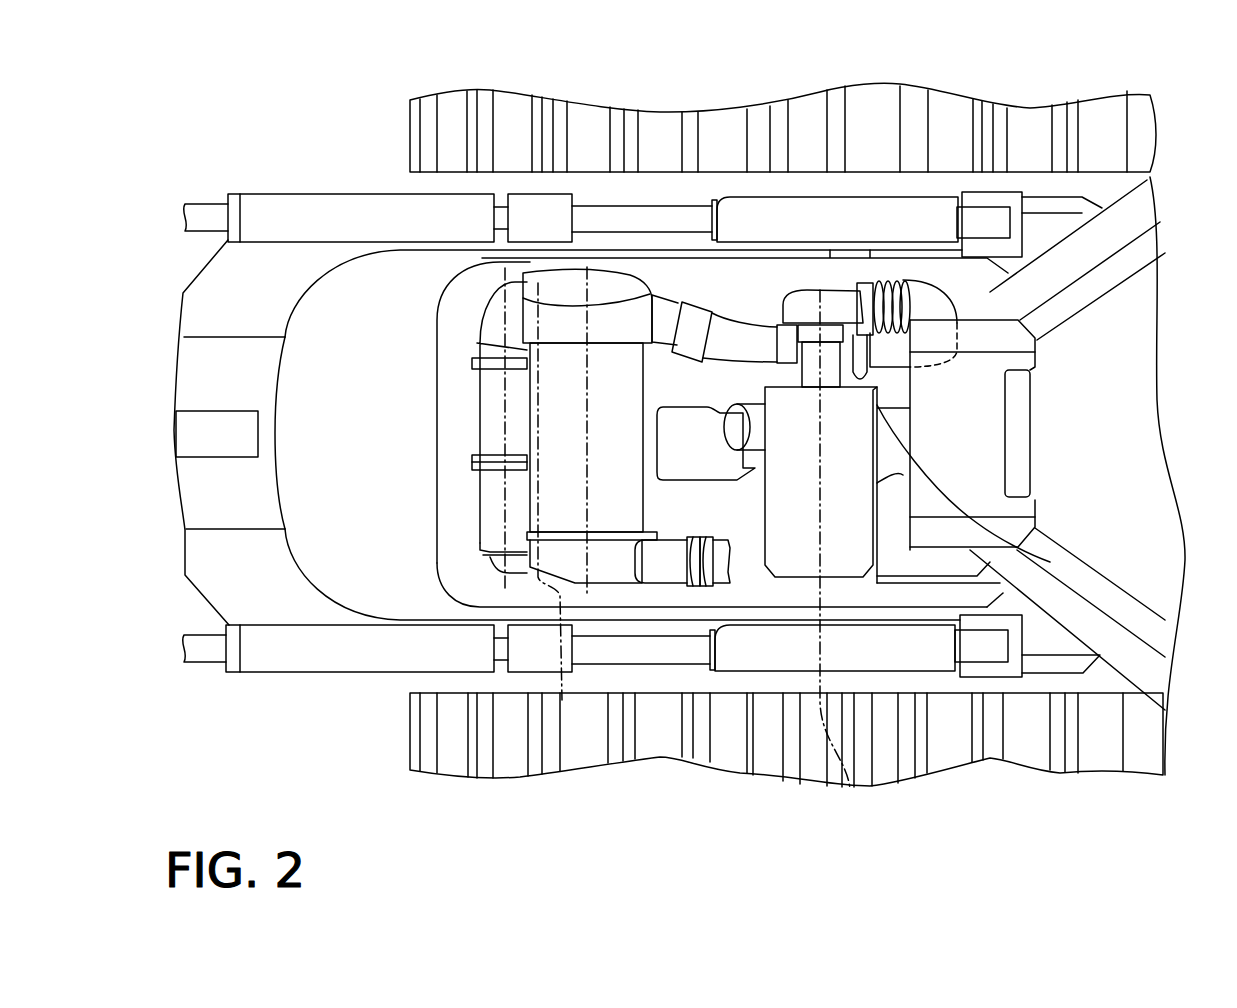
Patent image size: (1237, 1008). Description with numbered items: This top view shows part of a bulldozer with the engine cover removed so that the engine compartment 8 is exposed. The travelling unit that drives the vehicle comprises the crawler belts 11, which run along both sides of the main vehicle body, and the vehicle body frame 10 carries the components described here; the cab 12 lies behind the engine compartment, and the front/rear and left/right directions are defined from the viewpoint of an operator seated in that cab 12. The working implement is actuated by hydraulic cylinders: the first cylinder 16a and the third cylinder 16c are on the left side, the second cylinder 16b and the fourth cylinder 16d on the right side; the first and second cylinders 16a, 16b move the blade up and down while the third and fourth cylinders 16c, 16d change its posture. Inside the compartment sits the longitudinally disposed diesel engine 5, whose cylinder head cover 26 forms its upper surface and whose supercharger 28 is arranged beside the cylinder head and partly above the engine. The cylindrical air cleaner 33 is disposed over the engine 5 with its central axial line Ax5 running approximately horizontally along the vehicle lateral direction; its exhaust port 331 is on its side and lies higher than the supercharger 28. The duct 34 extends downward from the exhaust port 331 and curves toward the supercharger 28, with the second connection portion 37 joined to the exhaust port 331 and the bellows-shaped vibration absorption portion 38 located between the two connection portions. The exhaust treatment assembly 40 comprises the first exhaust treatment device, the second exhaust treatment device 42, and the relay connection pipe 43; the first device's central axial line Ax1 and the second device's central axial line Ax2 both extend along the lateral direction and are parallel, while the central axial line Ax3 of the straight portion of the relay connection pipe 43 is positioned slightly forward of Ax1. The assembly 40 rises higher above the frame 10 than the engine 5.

The engine 5 is at (898, 405).
The engine compartment 8 is at (705, 287).
The vehicle body frame 10 is at (888, 272).
The crawler belts 11 is at (583, 119).
The cab 12 is at (1083, 333).
The first cylinder 16a is at (817, 657).
The second cylinder 16b is at (817, 213).
The third cylinder 16c is at (287, 657).
The fourth cylinder 16d is at (306, 205).
The cylinder head cover 26 is at (680, 457).
The supercharger 28 is at (1050, 562).
The air cleaner 33 is at (787, 553).
The exhaust port 331 is at (835, 290).
The duct 34 is at (855, 270).
The second connection portion 37 is at (835, 347).
The vibration absorption portion 38 is at (915, 278).
The exhaust treatment assembly 40 is at (457, 496).
The second exhaust treatment device 42 is at (603, 563).
The relay connection pipe 43 is at (500, 560).
The central axial line of the first exhaust treatment device Ax1 is at (562, 700).
The central axial line of the second exhaust treatment device Ax2 is at (587, 267).
The central axial line of the straight line portion of the relay connection pipe Ax3 is at (507, 287).
The central axial line of the air cleaner Ax5 is at (856, 554).